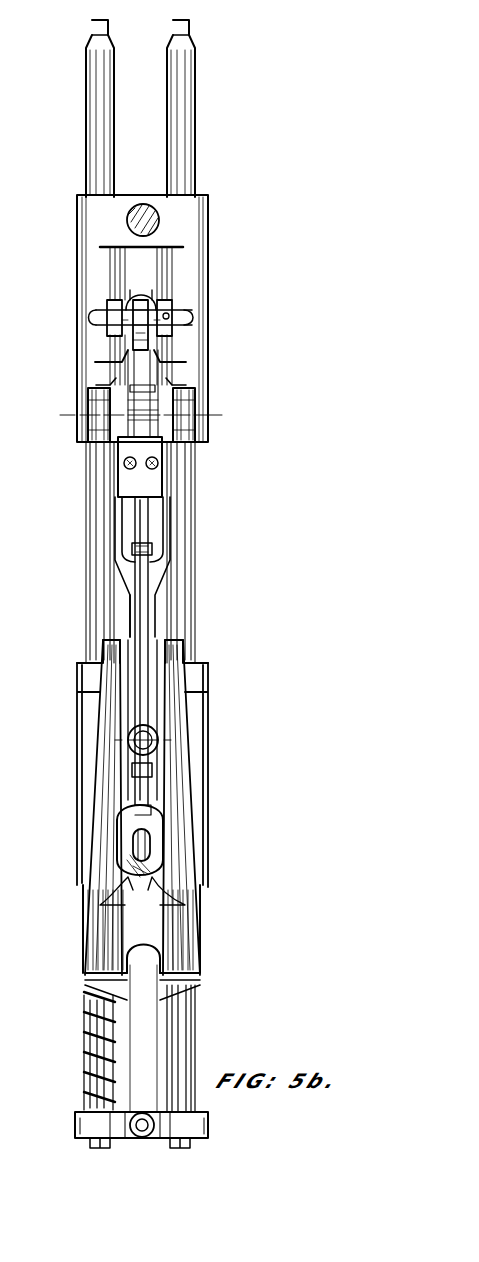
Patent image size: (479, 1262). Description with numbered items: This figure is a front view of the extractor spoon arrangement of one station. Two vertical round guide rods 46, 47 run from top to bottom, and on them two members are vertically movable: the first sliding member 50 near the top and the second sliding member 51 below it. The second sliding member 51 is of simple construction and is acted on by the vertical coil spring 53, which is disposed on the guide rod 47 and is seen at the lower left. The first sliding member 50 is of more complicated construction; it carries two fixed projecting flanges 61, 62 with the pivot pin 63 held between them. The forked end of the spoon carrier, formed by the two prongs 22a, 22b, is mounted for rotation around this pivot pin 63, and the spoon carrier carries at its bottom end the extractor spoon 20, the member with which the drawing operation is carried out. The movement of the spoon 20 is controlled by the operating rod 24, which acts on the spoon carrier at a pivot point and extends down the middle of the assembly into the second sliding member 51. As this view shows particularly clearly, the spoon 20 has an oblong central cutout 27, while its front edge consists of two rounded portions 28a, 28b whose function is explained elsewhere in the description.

The guide rod 47 is at (97, 107).
The guide rod 46 is at (178, 108).
The first sliding member 50 is at (68, 245).
The projecting flange 62 is at (100, 400).
The projecting flange 61 is at (190, 400).
The pivot pin 63 is at (212, 420).
The prong of forked end 22a is at (115, 520).
The prong of forked end 22b is at (163, 522).
The second sliding member 51 is at (226, 699).
The operating rod 24 is at (150, 795).
The extractor spoon 20 is at (125, 828).
The oblong central cutout 27 is at (155, 842).
The rounded portion 28a is at (125, 888).
The rounded portion 28b is at (200, 905).
The vertical coil spring 53 is at (88, 1040).